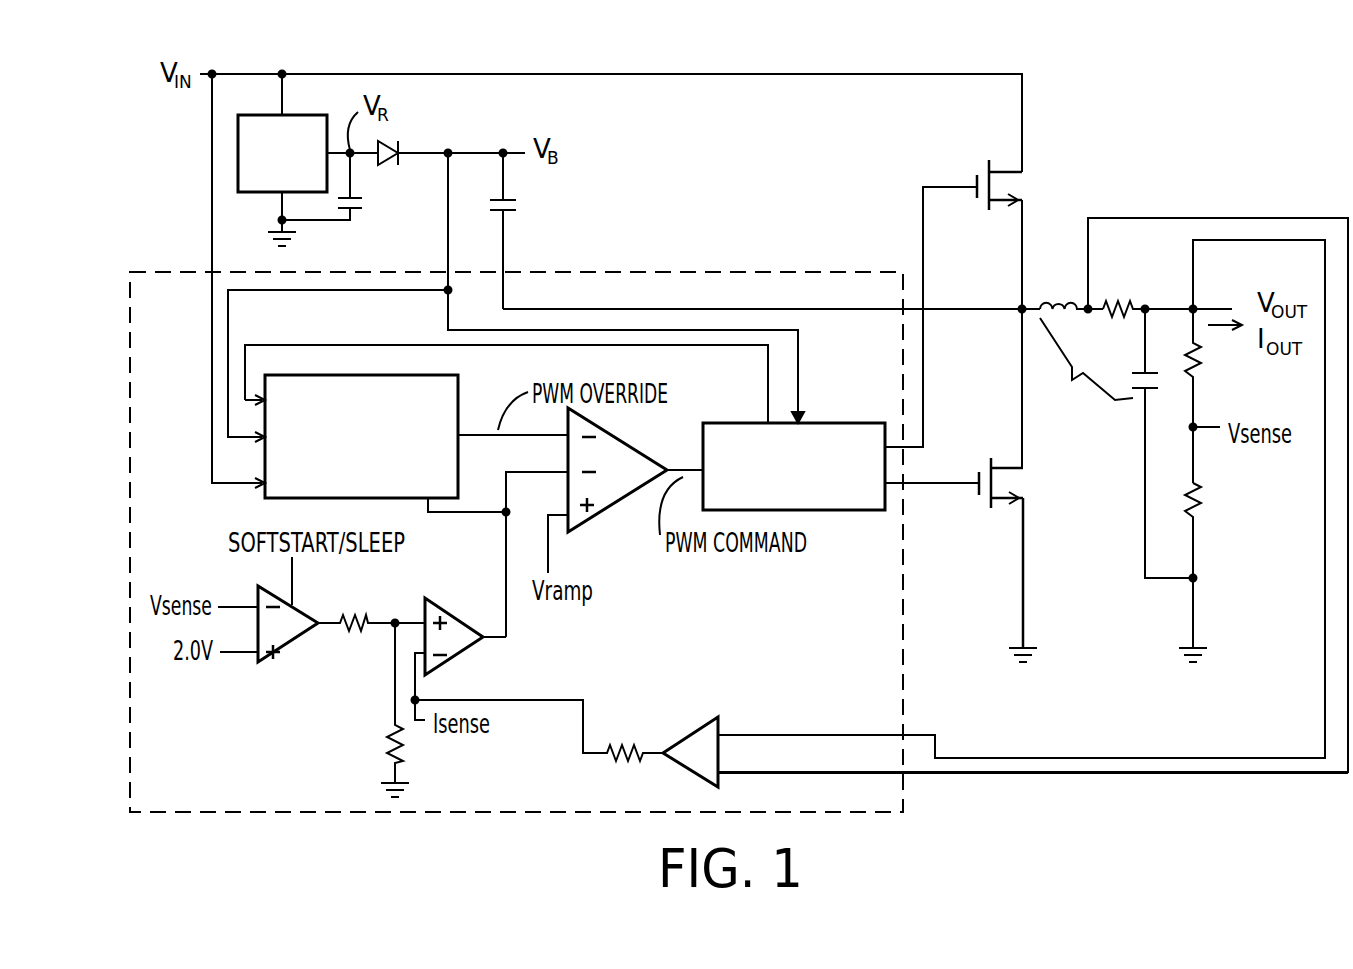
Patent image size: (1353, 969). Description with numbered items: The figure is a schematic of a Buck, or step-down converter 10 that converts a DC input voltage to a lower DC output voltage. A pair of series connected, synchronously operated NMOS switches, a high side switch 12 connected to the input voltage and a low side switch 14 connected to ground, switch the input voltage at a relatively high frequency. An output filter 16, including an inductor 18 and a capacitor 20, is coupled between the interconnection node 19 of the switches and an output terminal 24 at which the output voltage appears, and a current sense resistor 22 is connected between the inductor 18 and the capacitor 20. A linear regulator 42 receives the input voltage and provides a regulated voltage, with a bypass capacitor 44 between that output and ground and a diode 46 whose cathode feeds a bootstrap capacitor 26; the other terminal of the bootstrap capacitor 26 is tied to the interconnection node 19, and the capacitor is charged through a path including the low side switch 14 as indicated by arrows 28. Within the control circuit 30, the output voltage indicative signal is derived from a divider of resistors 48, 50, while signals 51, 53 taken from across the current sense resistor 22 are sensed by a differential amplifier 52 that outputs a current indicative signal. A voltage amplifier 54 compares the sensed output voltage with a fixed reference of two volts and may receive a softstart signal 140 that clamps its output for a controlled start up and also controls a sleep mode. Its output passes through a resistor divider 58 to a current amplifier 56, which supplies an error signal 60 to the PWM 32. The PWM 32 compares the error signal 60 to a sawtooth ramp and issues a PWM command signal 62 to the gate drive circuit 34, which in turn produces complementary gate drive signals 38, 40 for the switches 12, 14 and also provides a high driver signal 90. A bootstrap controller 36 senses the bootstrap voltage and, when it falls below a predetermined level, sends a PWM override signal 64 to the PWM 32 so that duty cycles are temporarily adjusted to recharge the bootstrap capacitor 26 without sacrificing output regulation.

The step-down converter 10 is at (413, 55).
The high side switch 12 is at (1017, 188).
The low side switch 14 is at (1010, 477).
The output filter 16 is at (1086, 360).
The inductor 18 is at (1071, 290).
The interconnection node 19 is at (1020, 306).
The capacitor 20 is at (1153, 380).
The current sense resistor 22 is at (1110, 307).
The output terminal 24 is at (1196, 307).
The bootstrap capacitor 26 is at (515, 208).
The arrows 28 is at (515, 232).
The control circuit 30 is at (717, 271).
The PWM 32 is at (607, 430).
The gate drive circuit 34 is at (843, 423).
The bootstrap controller 36 is at (458, 412).
The gate drive signal 38 is at (945, 185).
The gate drive signal 40 is at (933, 482).
The linear regulator 42 is at (268, 192).
The bypass capacitor 44 is at (362, 204).
The diode 46 is at (385, 145).
The resistor 48 is at (1202, 352).
The resistor 50 is at (1202, 493).
The signal 51 is at (918, 733).
The differential amplifier 52 is at (700, 727).
The signal 53 is at (913, 775).
The voltage amplifier 54 is at (290, 647).
The current amplifier 56 is at (458, 612).
The resistor divider 58 is at (388, 758).
The error signal 60 is at (508, 515).
The PWM command signal 62 is at (683, 468).
The PWM override signal 64 is at (478, 437).
The high driver signal 90 is at (768, 372).
The softstart signal 140 is at (330, 585).